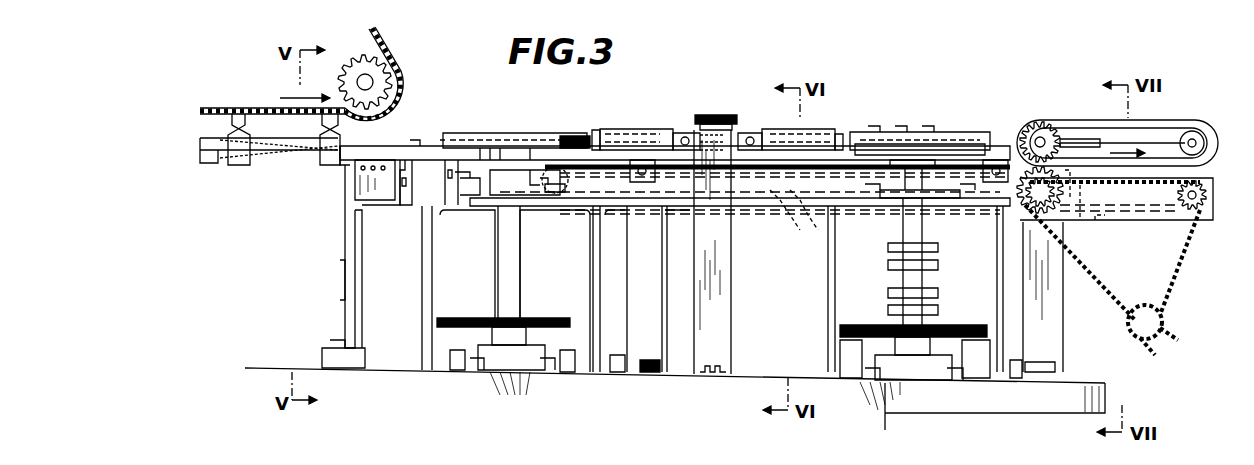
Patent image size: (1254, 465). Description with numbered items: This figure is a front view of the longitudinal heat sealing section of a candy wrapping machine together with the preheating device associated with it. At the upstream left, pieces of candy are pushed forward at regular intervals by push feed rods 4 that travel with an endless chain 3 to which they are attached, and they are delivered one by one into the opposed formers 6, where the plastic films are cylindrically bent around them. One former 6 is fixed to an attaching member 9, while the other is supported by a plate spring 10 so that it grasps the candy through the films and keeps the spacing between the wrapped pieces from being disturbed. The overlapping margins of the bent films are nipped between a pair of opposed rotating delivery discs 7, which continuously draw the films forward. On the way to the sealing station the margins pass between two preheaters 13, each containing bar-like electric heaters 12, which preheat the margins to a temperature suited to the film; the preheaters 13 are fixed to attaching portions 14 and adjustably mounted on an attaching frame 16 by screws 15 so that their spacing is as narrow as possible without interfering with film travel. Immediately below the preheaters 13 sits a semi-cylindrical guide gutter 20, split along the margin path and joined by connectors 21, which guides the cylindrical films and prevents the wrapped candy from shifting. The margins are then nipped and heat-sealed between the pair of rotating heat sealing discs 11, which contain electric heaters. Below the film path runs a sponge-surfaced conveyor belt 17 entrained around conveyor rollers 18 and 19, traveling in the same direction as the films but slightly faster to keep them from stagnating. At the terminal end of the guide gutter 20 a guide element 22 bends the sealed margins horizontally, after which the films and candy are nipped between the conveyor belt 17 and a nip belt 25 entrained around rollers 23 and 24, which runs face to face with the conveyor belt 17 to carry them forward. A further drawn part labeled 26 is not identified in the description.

The endless chain 3 is at (270, 106).
The push feed rods 4 is at (240, 163).
The formers 6 is at (380, 146).
The delivery discs 7 is at (472, 133).
The attaching member 9 is at (355, 190).
The plate spring 10 is at (402, 208).
The heat sealing discs 11 is at (952, 134).
The bar-like electric heaters 12 is at (506, 300).
The preheaters 13 is at (788, 132).
The attaching portions 14 is at (647, 289).
The screws 15 is at (720, 114).
The attaching frame 16 is at (728, 280).
The conveyor belt 17 is at (784, 222).
The conveyor roller 18 is at (575, 205).
The conveyor roller 19 is at (1178, 210).
The guide gutter 20 is at (878, 132).
The connectors 21 is at (594, 134).
The guide element 22 is at (1004, 150).
The roller 23 is at (1043, 122).
The roller 24 is at (1192, 128).
The nip belt 25 is at (1105, 124).
The spindle drive 26 is at (925, 304).